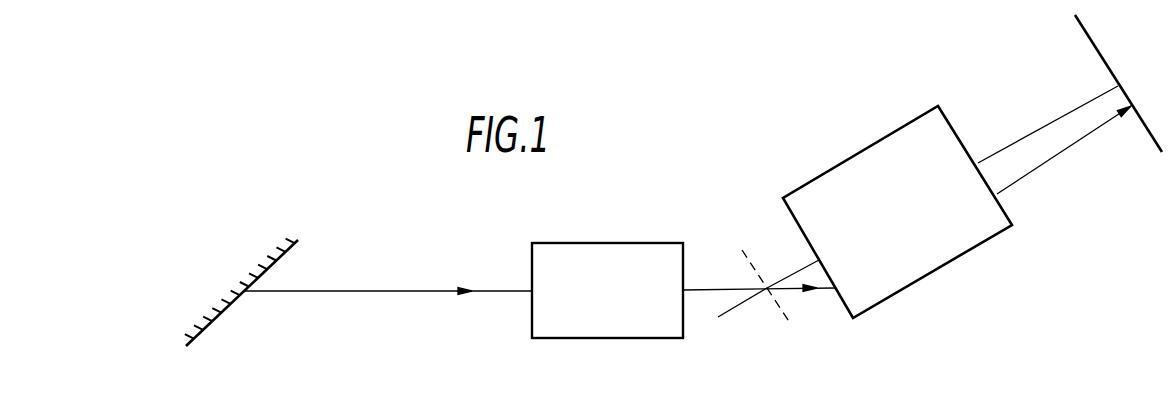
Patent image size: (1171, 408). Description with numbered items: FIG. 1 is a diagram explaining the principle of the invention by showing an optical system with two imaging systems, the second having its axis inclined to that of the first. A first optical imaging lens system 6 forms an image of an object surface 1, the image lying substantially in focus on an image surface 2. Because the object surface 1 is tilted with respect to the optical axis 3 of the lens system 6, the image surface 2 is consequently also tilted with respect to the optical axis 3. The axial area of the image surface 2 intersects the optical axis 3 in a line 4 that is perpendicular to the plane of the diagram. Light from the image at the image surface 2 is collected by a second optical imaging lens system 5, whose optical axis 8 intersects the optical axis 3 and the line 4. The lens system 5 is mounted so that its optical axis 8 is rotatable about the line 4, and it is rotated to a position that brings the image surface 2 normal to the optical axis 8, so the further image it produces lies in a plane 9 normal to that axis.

The object surface 1 is at (300, 243).
The image surface 2 is at (790, 324).
The optical axis 3 is at (368, 293).
The line 4 is at (766, 294).
The second optical imaging lens system 5 is at (897, 212).
The first optical imaging lens system 6 is at (607, 290).
The optical axis 8 is at (792, 271).
The plane 9 is at (1096, 46).